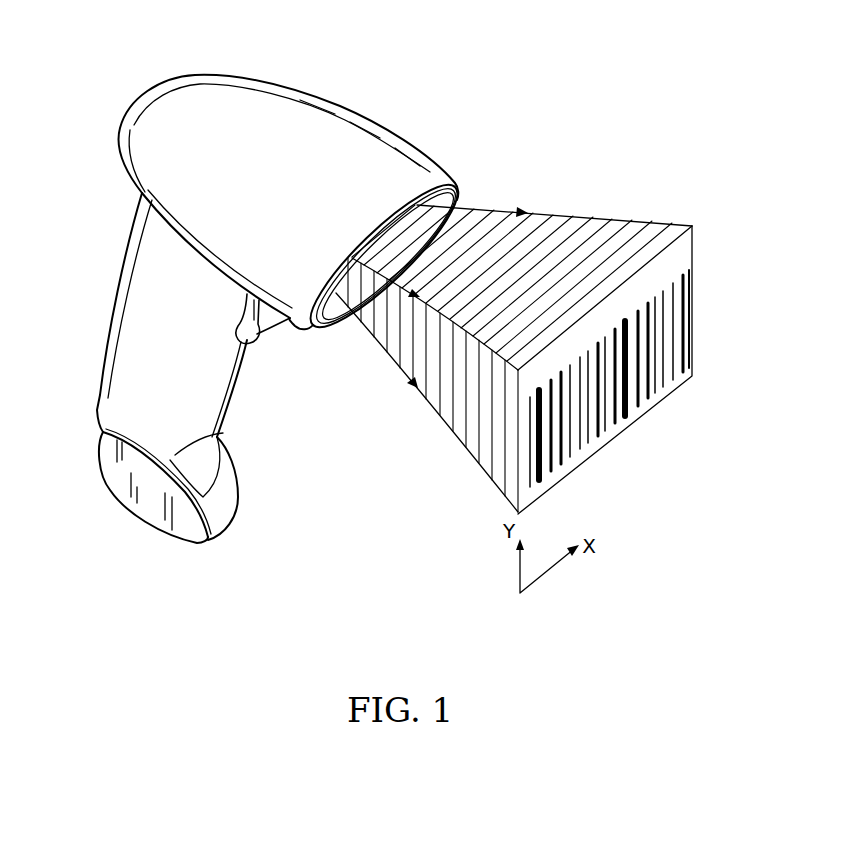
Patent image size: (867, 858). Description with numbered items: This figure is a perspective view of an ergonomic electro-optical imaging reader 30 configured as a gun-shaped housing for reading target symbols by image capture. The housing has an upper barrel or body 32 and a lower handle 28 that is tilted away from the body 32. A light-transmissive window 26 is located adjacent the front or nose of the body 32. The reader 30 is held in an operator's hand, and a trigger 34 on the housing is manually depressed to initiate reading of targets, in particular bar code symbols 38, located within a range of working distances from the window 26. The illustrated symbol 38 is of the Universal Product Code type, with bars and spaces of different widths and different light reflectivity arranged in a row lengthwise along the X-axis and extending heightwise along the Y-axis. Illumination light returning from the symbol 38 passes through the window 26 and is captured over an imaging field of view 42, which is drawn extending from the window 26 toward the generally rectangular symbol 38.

The electro-optical imaging reader 30 is at (70, 273).
The body 32 is at (265, 95).
The window 26 is at (333, 305).
The handle 28 is at (102, 344).
The trigger 34 is at (262, 331).
The imaging field of view 42 is at (598, 232).
The bar code symbol 38 is at (693, 300).